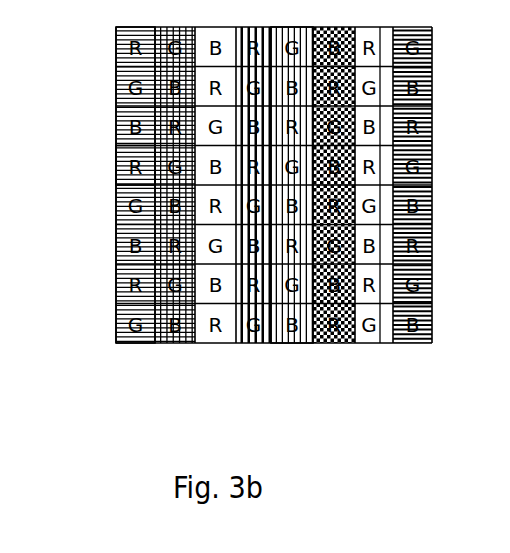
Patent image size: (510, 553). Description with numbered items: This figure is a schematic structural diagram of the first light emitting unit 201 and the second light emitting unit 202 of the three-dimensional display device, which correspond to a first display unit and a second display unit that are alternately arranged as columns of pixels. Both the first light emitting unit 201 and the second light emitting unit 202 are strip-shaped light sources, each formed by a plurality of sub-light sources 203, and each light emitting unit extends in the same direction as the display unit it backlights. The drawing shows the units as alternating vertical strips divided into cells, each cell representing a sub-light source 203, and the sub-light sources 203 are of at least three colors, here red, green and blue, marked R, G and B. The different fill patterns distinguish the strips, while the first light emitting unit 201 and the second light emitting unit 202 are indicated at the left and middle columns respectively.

The first light emitting unit 201 is at (137, 325).
The second light emitting unit 202 is at (297, 325).
The sub-light source 203 is at (125, 173).